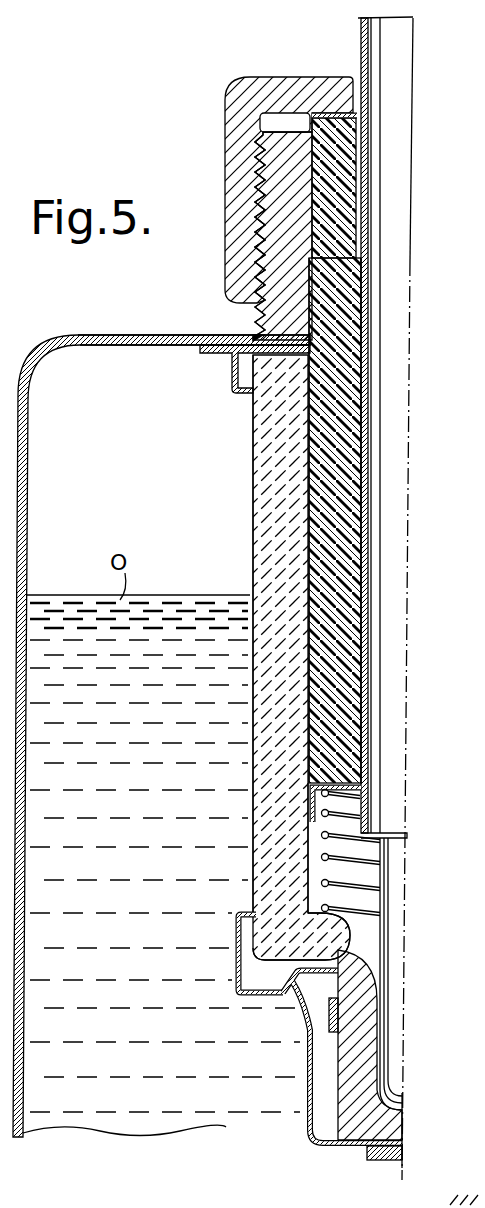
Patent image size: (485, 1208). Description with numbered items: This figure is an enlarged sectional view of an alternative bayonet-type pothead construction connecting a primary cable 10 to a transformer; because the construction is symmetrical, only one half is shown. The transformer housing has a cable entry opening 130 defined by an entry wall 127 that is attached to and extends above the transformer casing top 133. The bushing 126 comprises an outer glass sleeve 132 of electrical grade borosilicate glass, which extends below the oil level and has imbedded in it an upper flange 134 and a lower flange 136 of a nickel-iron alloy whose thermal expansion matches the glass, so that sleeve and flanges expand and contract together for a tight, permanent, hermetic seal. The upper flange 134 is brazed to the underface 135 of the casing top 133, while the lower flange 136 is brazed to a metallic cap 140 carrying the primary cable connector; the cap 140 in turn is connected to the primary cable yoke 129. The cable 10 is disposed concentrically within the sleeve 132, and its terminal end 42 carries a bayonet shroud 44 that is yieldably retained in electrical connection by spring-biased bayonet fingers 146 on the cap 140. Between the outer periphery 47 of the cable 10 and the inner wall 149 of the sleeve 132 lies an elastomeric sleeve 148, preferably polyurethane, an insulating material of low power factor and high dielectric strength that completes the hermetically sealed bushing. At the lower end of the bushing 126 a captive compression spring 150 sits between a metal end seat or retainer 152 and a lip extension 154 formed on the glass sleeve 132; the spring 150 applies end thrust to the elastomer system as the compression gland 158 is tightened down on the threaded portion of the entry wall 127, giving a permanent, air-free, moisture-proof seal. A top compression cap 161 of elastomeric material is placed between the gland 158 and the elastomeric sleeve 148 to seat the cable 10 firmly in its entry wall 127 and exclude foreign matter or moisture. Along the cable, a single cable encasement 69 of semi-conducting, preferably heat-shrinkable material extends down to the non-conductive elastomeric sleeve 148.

The primary cable 10 is at (376, 598).
The cable encasement 69 is at (358, 43).
The compression gland 158 is at (233, 101).
The top compression cap 161 is at (340, 230).
The entry wall 127 is at (257, 262).
The cable entry opening 130 is at (282, 236).
The transformer casing top 133 is at (125, 323).
The underface 135 is at (140, 346).
The upper flange 134 is at (232, 376).
The bushing 126 is at (252, 463).
The outer glass sleeve 132 is at (272, 517).
The inner wall 149 is at (311, 507).
The elastomeric sleeve 148 is at (345, 500).
The outer periphery 47 is at (358, 563).
The end seat or retainer 152 is at (331, 783).
The compression spring 150 is at (308, 858).
The bayonet shroud 44 is at (397, 852).
The terminal end 42 is at (414, 965).
The lip extension 154 is at (352, 935).
The lower flange 136 is at (236, 968).
The metallic cap 140 is at (300, 1035).
The bayonet fingers 146 is at (360, 1058).
The primary cable yoke 129 is at (365, 1156).